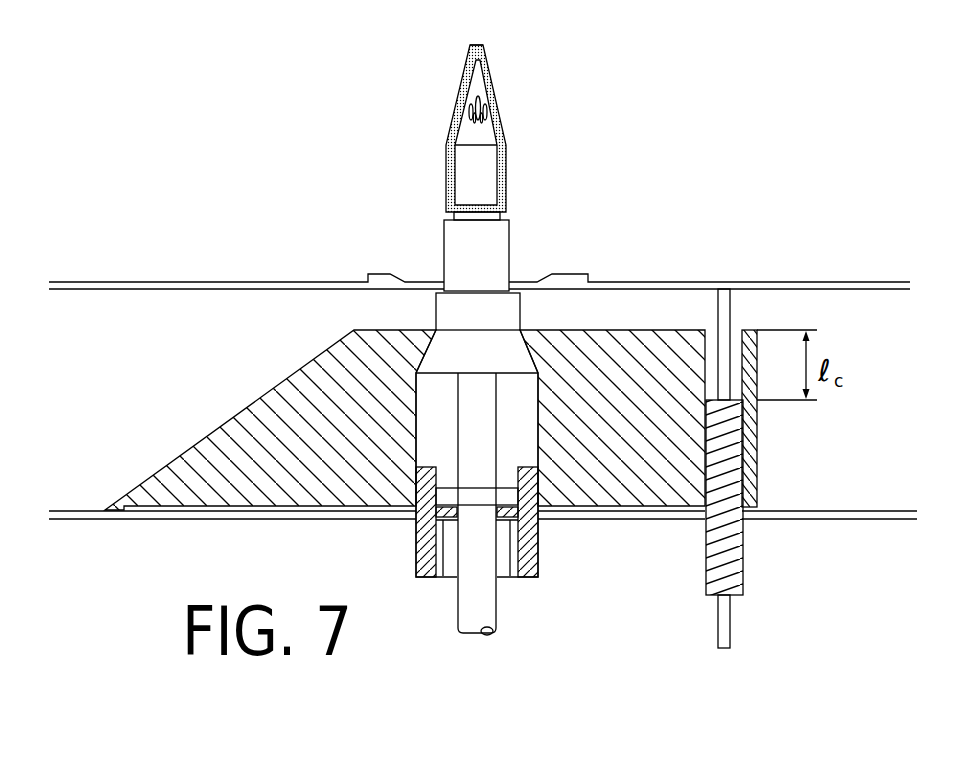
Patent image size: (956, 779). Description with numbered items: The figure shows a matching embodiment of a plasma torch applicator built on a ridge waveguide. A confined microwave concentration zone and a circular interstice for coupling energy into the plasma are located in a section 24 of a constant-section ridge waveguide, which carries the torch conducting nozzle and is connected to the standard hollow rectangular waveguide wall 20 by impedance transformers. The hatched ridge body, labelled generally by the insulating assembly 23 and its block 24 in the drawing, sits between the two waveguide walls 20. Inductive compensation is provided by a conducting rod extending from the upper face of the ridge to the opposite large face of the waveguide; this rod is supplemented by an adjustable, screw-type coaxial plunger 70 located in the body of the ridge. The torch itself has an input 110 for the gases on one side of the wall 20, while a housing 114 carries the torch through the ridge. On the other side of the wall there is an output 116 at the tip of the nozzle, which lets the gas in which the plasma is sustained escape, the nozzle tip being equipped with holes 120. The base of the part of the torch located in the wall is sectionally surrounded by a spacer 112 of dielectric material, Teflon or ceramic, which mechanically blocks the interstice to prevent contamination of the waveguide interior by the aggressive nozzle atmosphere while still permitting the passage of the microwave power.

The hollow rectangular waveguide wall 20 is at (762, 281).
The insulation assembly 23 is at (207, 416).
The ridge waveguide section 24 is at (653, 330).
The coaxial plunger 70 is at (740, 545).
The gas input 110 is at (497, 633).
The spacer 112 is at (503, 115).
The burner housing 114 is at (498, 260).
The output 116 is at (470, 47).
The holes 120 is at (463, 112).